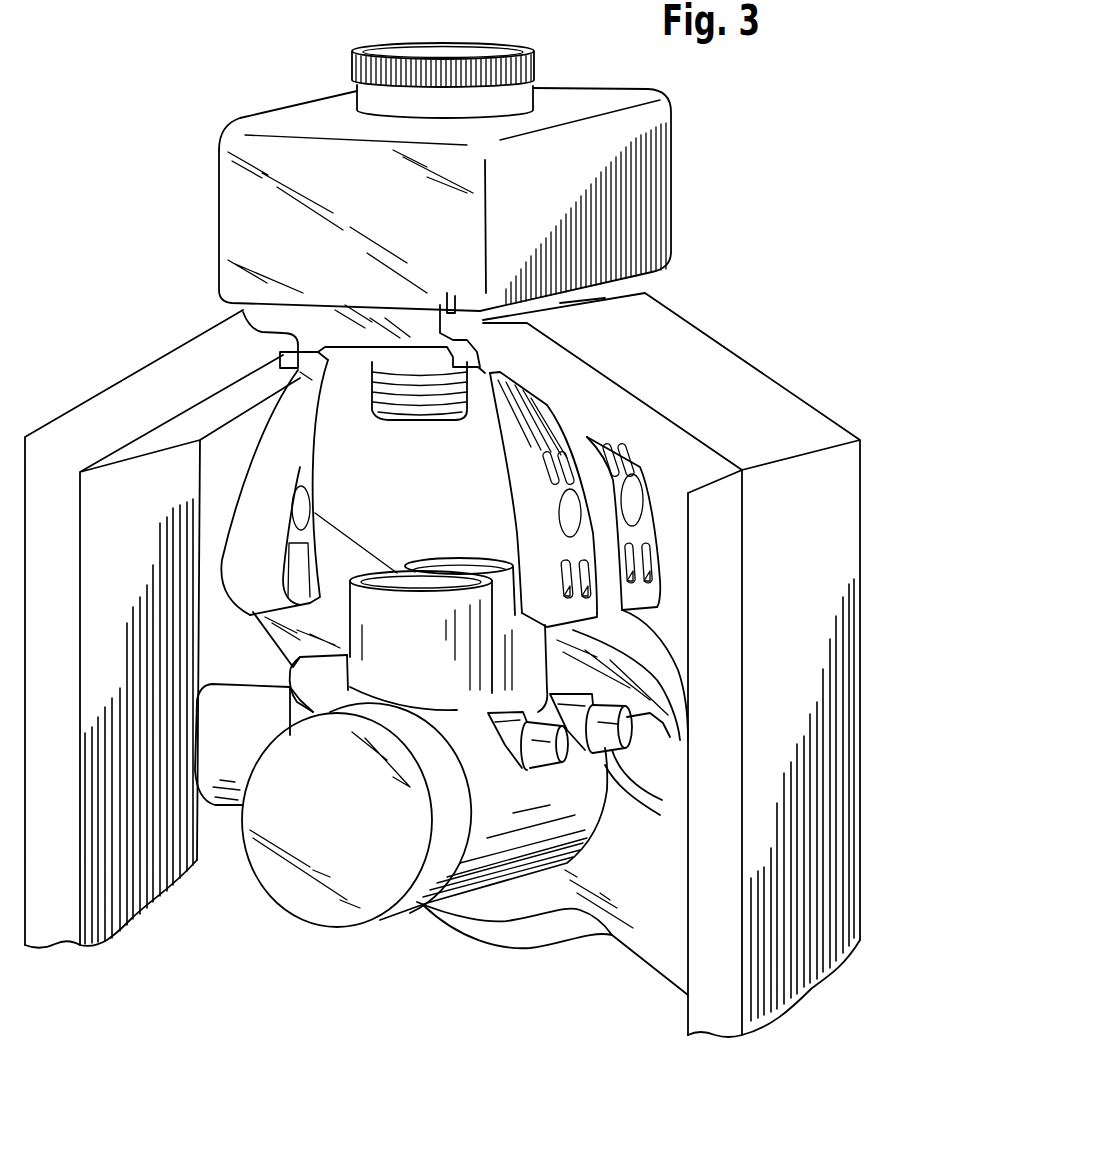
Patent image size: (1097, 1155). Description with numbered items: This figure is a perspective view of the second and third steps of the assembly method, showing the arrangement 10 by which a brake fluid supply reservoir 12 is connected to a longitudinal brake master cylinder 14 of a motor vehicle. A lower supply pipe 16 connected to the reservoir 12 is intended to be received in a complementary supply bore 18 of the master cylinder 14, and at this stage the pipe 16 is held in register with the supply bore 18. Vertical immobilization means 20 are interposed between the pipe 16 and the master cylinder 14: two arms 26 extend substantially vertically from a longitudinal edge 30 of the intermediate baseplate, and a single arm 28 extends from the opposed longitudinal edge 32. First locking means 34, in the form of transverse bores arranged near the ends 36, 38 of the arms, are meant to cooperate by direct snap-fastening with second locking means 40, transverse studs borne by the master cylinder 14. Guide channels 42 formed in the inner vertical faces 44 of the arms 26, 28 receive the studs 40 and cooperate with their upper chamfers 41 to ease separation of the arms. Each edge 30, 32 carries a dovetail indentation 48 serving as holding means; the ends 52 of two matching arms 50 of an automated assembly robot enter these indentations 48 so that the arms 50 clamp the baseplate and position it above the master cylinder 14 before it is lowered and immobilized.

The arrangement 10 is at (188, 229).
The brake fluid supply reservoir 12 is at (653, 177).
The longitudinal brake master cylinder 14 is at (300, 880).
The lower supply pipe 16 is at (467, 403).
The supply bore 18 is at (432, 583).
The vertical immobilization means 20 is at (667, 525).
The arms 26 is at (499, 413).
The arm 28 is at (320, 457).
The longitudinal edge 30 is at (487, 356).
The opposed longitudinal edge 32 is at (240, 333).
The first locking means 34 is at (305, 508).
The ends of the arms 36 is at (577, 627).
The ends of the arms 38 is at (257, 617).
The second locking means 40 is at (360, 678).
The upper chamfers 41 is at (566, 768).
The guide channels 42 is at (308, 587).
The inner vertical faces 44 is at (297, 587).
The indentation 48 is at (450, 312).
The arms of an automated assembly robot 50 is at (779, 372).
The ends of the arms 52 is at (590, 302).